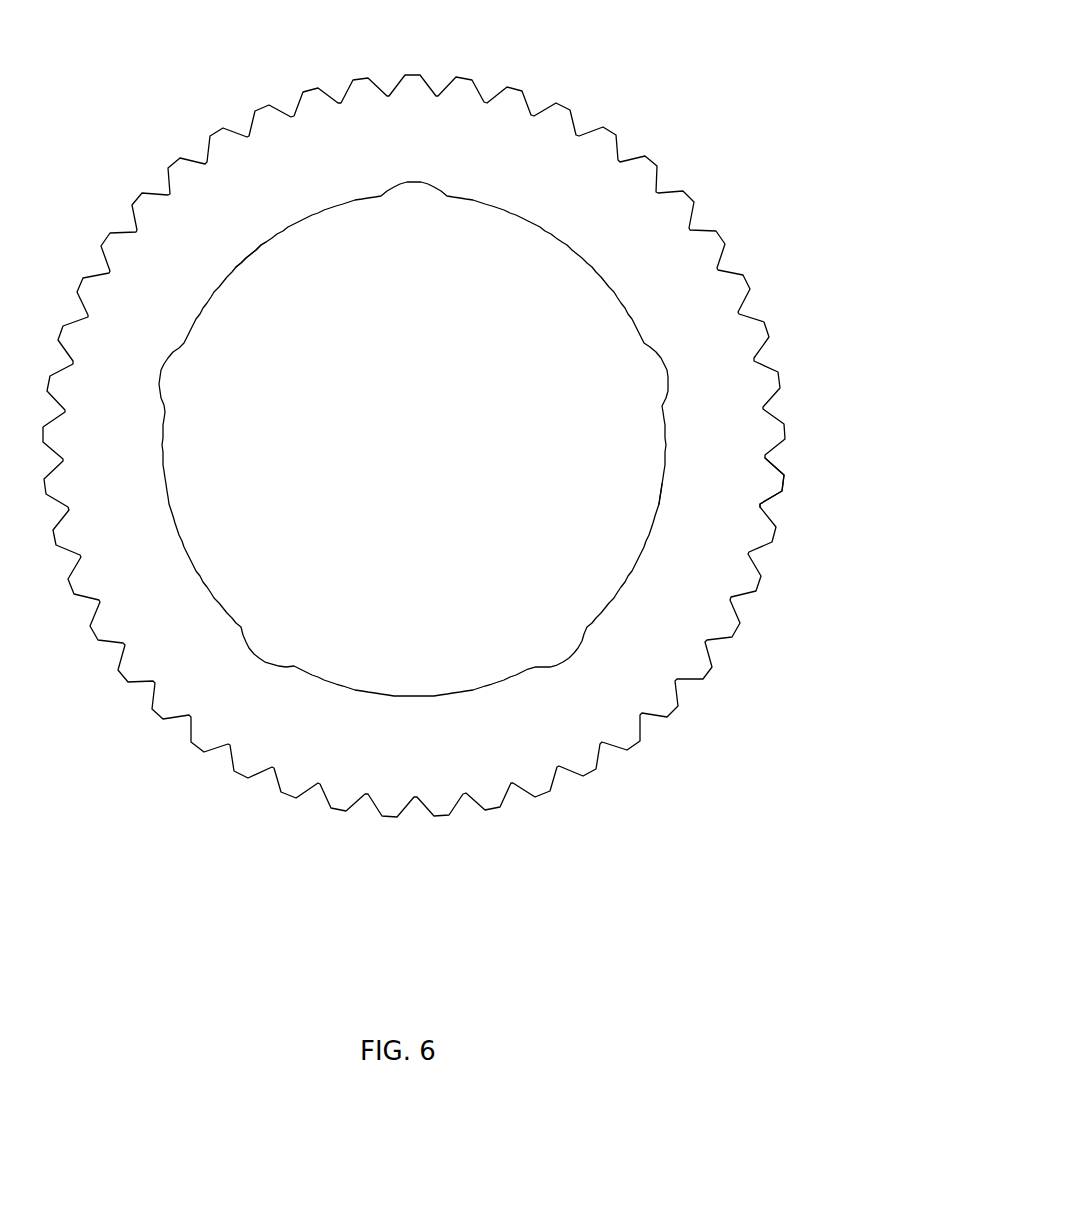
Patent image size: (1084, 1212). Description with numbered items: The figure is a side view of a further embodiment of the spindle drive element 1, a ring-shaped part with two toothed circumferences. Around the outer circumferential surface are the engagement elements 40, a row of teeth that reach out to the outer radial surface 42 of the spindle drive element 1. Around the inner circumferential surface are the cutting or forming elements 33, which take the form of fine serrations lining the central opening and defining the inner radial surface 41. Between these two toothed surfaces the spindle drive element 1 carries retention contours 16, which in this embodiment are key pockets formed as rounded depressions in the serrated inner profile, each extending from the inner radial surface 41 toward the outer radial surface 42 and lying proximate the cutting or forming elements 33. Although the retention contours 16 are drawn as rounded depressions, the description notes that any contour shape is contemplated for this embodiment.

The spindle drive element 1 is at (459, 412).
The engagement elements 40 is at (751, 337).
The outer radial surface 42 is at (775, 463).
The retention contours 16 is at (660, 364).
The cutting or forming elements 33 is at (253, 255).
The inner radial surface 41 is at (660, 482).